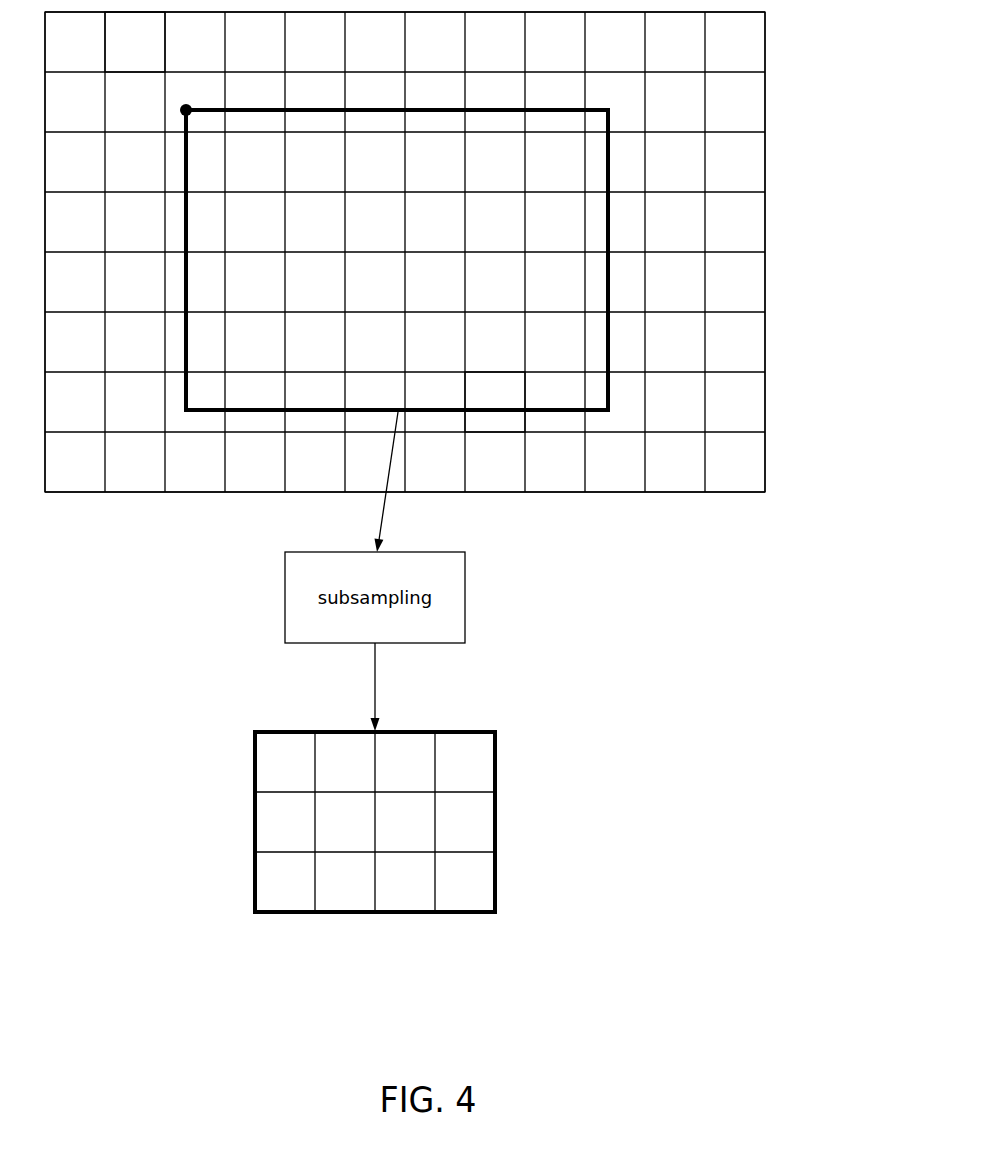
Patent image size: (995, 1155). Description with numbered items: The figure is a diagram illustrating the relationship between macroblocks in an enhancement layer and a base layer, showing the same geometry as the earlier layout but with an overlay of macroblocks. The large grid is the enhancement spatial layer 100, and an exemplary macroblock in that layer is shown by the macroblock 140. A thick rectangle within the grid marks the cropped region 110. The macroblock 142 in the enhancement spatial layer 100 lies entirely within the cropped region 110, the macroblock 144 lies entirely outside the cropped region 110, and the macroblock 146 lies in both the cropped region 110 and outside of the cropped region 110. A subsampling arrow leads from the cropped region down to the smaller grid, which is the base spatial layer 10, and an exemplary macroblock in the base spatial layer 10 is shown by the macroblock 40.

The base spatial layer 10 is at (506, 847).
The macroblock 40 is at (420, 834).
The enhancement spatial layer 100 is at (772, 355).
The cropped region 110 is at (622, 296).
The macroblock 140 is at (696, 417).
The macroblock 142 is at (453, 298).
The macroblock 144 is at (153, 58).
The macroblock 146 is at (515, 399).